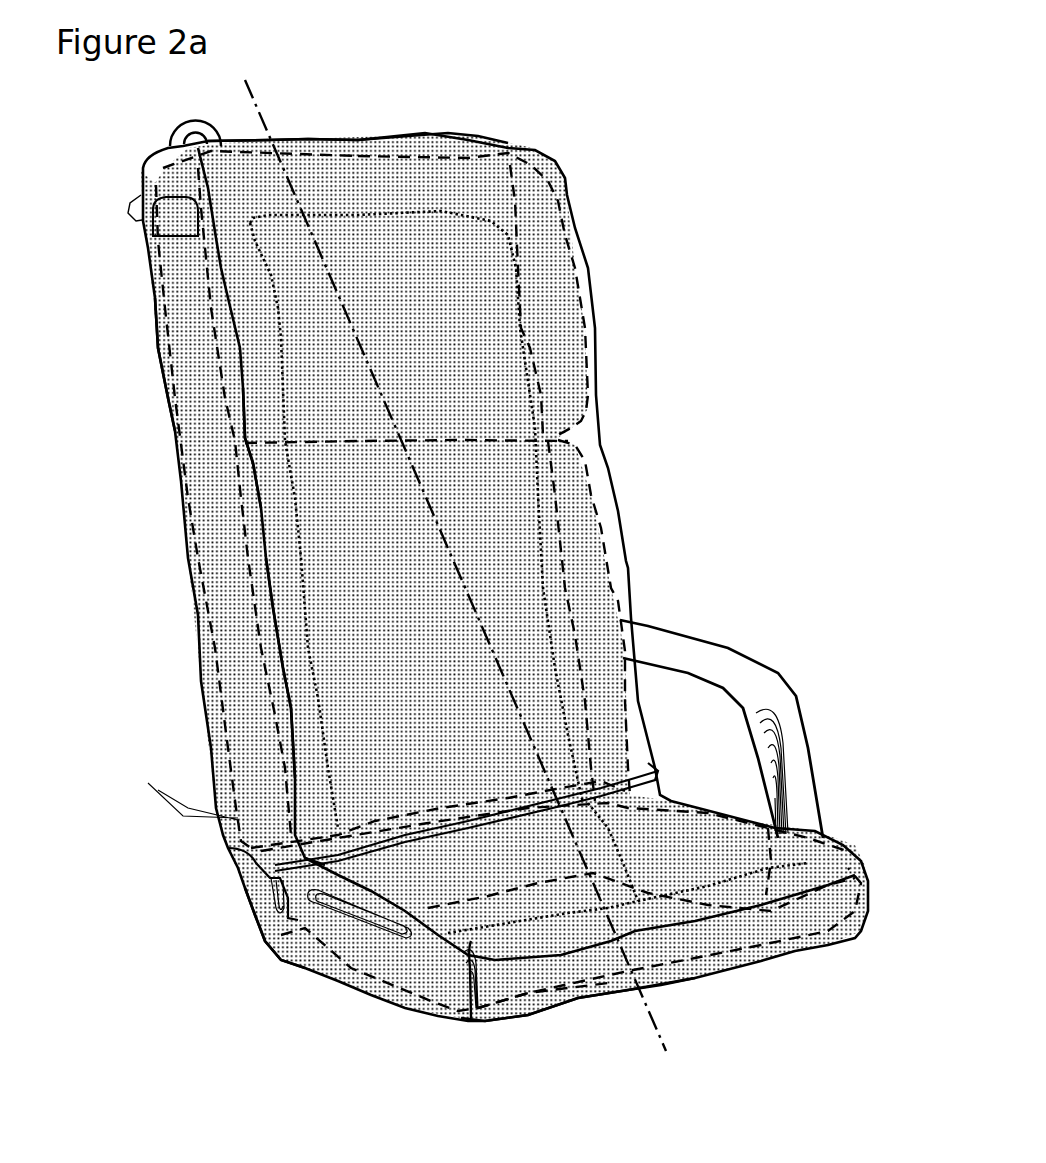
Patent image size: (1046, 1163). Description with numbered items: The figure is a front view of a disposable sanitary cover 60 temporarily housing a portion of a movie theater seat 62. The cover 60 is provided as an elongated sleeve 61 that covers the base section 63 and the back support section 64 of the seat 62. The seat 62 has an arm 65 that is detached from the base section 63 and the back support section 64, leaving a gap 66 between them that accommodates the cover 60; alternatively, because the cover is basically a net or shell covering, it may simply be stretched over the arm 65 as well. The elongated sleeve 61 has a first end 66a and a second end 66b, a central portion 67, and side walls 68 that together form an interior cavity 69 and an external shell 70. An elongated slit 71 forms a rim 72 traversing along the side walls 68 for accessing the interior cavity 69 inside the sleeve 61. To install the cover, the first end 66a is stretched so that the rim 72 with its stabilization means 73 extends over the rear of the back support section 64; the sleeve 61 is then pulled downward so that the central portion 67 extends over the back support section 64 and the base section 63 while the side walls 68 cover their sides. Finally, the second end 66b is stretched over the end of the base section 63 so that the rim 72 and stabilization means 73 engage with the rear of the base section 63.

The disposable sanitary cover 60 is at (730, 156).
The elongated sleeve 61 is at (603, 448).
The seat 62 is at (473, 166).
The base section 63 is at (542, 897).
The back support section 64 is at (410, 592).
The arm 65 is at (695, 612).
The gap 66 is at (600, 620).
The first end 66a is at (367, 130).
The second end 66b is at (535, 1000).
The central portion 67 is at (465, 308).
The side walls 68 is at (148, 345).
The interior cavity 69 is at (220, 838).
The external shell 70 is at (250, 910).
The elongated slit 71 is at (295, 515).
The rim 72 is at (295, 580).
The stabilization means 73 is at (305, 675).